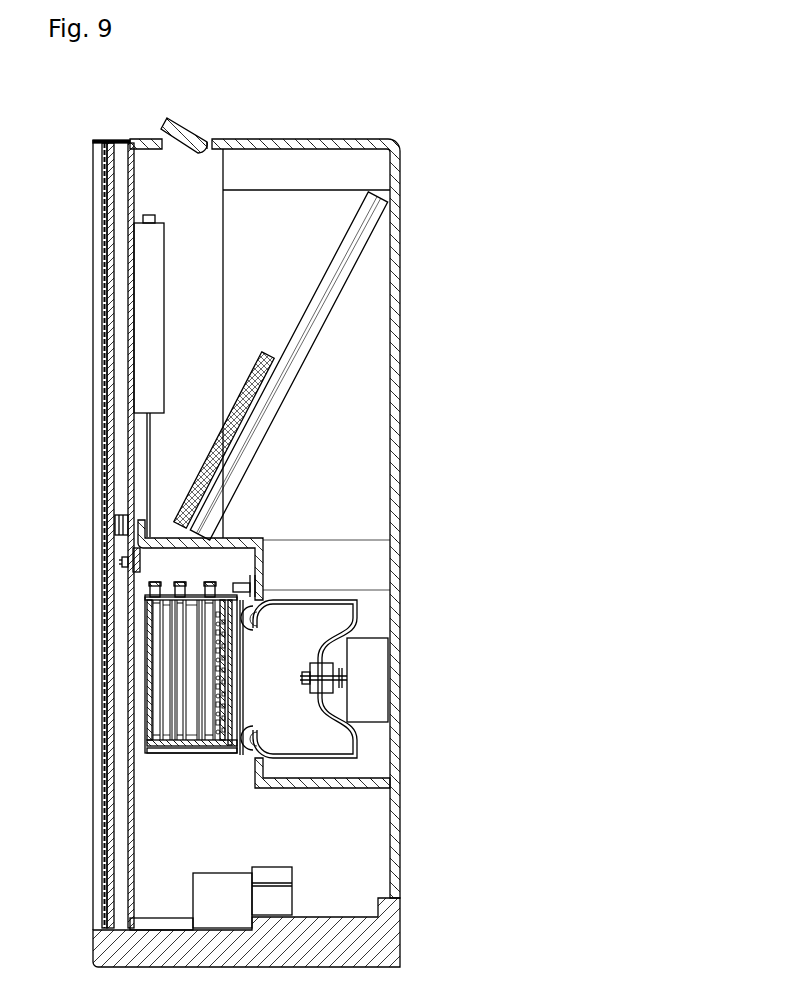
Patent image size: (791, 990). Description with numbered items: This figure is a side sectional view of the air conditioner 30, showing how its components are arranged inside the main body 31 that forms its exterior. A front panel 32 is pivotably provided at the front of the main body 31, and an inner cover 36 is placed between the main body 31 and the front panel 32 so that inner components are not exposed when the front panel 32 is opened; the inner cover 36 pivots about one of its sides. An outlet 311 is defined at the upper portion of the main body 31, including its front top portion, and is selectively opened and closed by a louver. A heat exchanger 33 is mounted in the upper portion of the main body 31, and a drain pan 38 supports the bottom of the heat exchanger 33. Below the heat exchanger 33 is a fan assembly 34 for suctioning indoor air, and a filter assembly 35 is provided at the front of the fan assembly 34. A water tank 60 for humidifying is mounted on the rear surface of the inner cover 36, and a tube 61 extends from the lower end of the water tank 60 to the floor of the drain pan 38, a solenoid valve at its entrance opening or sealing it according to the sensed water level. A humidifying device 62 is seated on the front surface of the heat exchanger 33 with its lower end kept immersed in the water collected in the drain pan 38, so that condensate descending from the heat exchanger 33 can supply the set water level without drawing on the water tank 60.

The air conditioner 30 is at (386, 110).
The main body 31 is at (395, 324).
The outlet 311 is at (172, 142).
The front panel 32 is at (102, 289).
The heat exchanger 33 is at (292, 368).
The fan assembly 34 is at (357, 630).
The filter assembly 35 is at (147, 678).
The inner cover 36 is at (128, 339).
The drain pan 38 is at (250, 540).
The water tank 60 is at (147, 367).
The tube 61 is at (147, 454).
The humidifying device 62 is at (248, 380).